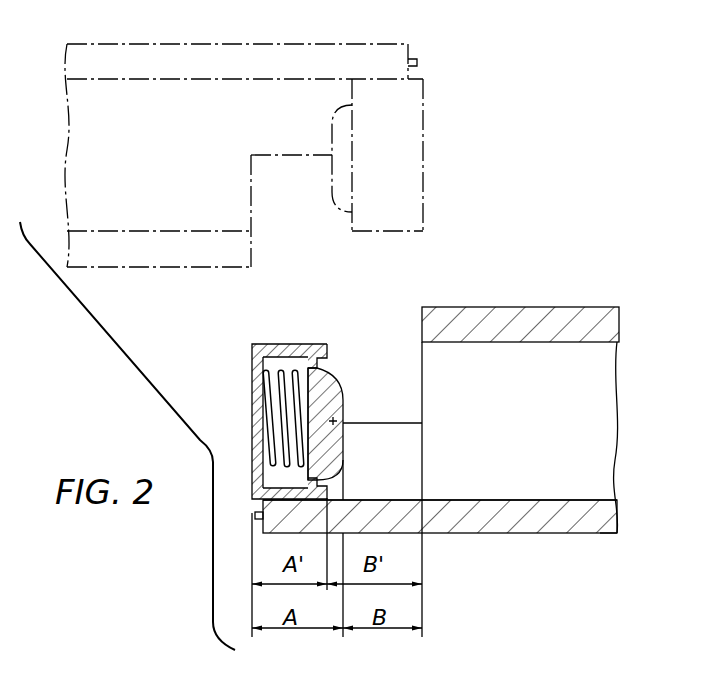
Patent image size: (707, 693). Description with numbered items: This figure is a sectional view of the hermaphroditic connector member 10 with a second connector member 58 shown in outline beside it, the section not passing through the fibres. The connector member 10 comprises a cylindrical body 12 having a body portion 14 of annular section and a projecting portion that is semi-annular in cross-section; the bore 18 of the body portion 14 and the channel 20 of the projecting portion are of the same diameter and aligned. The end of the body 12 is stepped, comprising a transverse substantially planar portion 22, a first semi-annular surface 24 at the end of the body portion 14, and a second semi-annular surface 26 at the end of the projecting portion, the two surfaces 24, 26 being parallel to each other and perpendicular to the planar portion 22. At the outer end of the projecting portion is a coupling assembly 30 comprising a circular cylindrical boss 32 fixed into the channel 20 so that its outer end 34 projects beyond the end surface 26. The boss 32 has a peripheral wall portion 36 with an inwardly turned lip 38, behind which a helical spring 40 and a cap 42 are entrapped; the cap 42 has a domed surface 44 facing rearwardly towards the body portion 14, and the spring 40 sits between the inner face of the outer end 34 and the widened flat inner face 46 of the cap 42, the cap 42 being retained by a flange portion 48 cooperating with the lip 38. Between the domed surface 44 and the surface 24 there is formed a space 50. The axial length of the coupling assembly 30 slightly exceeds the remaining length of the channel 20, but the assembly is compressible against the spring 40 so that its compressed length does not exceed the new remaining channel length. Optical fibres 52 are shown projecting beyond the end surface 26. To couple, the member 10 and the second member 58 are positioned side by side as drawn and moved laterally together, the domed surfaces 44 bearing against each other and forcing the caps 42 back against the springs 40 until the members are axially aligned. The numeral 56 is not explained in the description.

The hermaphroditic connector member 10 is at (552, 556).
The cylindrical body 12 is at (512, 542).
The body portion 14 is at (589, 537).
The bore 18 is at (603, 366).
The channel 20 is at (398, 498).
The transverse substantially planar portion 22 is at (402, 422).
The first semi-annular surface 24 is at (420, 322).
The second semi-annular surface 26 is at (253, 526).
The coupling assembly 30 is at (292, 337).
The circular cylindrical boss 32 is at (244, 371).
The outer end of the boss 34 is at (263, 392).
The peripheral wall portion 36 is at (273, 357).
The inwardly turned lip 38 is at (330, 350).
The helical spring 40 is at (285, 405).
The cap 42 is at (333, 447).
The domed surface 44 is at (338, 386).
The widened flat inner face 46 is at (317, 394).
The flange portion 48 is at (305, 481).
The space 50 is at (396, 348).
The optical fibres 52 is at (253, 512).
The slot 56 is at (303, 441).
The second connector member 58 is at (343, 44).